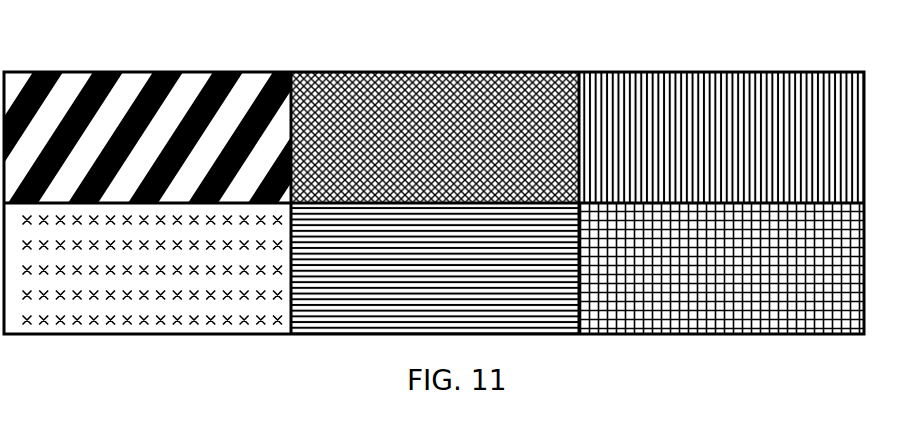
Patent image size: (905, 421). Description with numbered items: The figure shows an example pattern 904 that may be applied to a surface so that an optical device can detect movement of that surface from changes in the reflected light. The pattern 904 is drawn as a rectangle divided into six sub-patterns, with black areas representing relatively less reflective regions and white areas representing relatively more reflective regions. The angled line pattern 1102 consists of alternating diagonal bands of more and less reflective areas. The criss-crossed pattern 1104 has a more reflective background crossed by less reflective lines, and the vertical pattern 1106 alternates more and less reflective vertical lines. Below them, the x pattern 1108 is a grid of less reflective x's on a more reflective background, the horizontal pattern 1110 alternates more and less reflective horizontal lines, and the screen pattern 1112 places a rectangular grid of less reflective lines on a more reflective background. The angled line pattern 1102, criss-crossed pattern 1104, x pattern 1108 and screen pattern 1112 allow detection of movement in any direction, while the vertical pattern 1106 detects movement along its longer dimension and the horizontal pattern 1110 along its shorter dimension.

The pattern 904 is at (131, 28).
The angled line pattern 1102 is at (32, 72).
The criss-crossed pattern 1104 is at (318, 72).
The vertical pattern 1106 is at (598, 72).
The x pattern 1108 is at (33, 334).
The horizontal pattern 1110 is at (320, 334).
The screen pattern 1112 is at (602, 334).